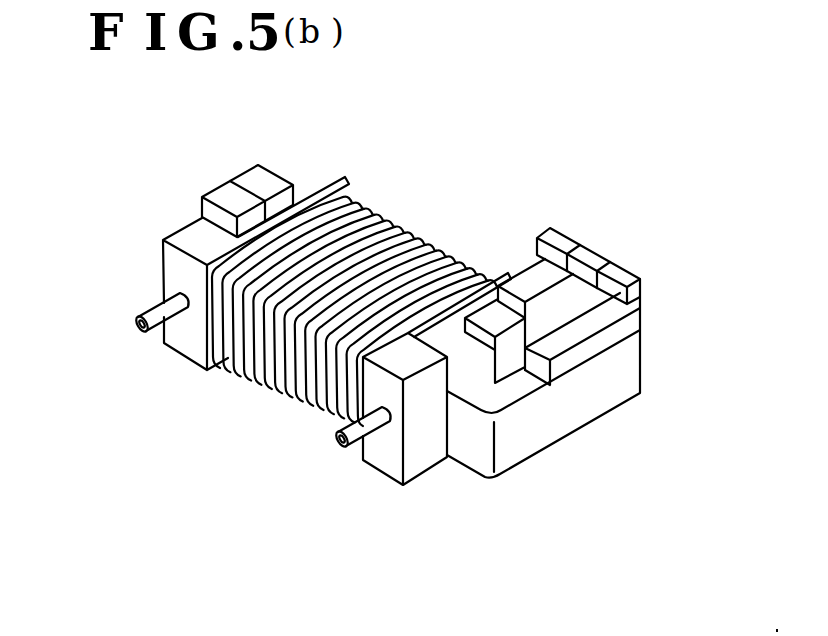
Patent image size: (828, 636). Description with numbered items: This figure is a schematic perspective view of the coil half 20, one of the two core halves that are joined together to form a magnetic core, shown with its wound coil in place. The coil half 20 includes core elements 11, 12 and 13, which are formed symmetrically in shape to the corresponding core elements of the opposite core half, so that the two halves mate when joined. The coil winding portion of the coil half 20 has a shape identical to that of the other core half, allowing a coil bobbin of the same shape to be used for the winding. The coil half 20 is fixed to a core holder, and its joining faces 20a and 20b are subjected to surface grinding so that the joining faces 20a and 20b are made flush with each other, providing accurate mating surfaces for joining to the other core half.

The coil half 20 is at (595, 431).
The joining face 20a is at (621, 277).
The joining face 20b is at (277, 174).
The core element 11 is at (530, 271).
The core element 12 is at (583, 323).
The core element 13 is at (571, 291).